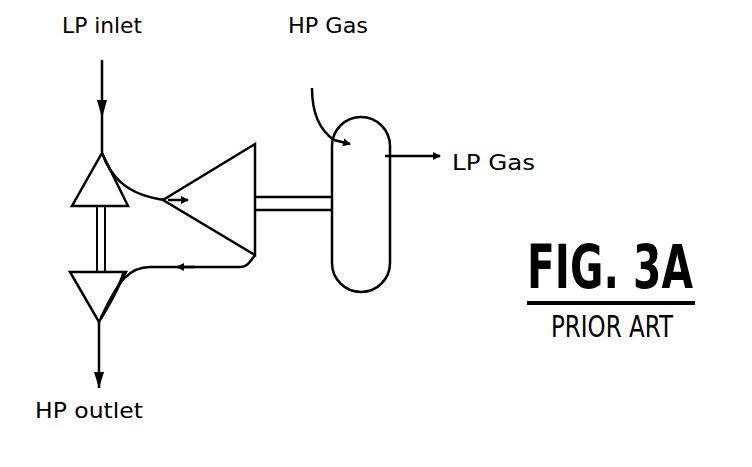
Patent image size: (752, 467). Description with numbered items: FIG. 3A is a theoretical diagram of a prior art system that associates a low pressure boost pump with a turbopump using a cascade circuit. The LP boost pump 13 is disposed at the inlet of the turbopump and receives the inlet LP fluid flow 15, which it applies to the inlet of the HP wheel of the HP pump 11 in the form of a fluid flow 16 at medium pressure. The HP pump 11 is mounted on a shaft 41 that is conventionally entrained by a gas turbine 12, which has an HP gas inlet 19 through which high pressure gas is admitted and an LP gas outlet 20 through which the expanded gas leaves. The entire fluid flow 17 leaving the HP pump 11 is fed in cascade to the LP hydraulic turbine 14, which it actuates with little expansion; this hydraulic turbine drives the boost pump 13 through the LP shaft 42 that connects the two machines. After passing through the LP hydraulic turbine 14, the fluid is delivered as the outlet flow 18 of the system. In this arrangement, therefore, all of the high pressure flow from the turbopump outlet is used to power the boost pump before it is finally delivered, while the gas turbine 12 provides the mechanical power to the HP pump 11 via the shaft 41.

The HP pump 11 is at (257, 177).
The gas turbine 12 is at (390, 248).
The LP boost pump 13 is at (93, 182).
The LP hydraulic turbine 14 is at (113, 297).
The inlet LP fluid flow 15 is at (103, 77).
The fluid flow at medium pressure 16 is at (143, 192).
The fluid flow leaving the HP pump 17 is at (210, 270).
The outlet flow 18 is at (101, 365).
The HP gas inlet 19 is at (315, 112).
The LP gas outlet 20 is at (412, 152).
The shaft of the HP pump 41 is at (283, 210).
The LP shaft 42 is at (95, 233).